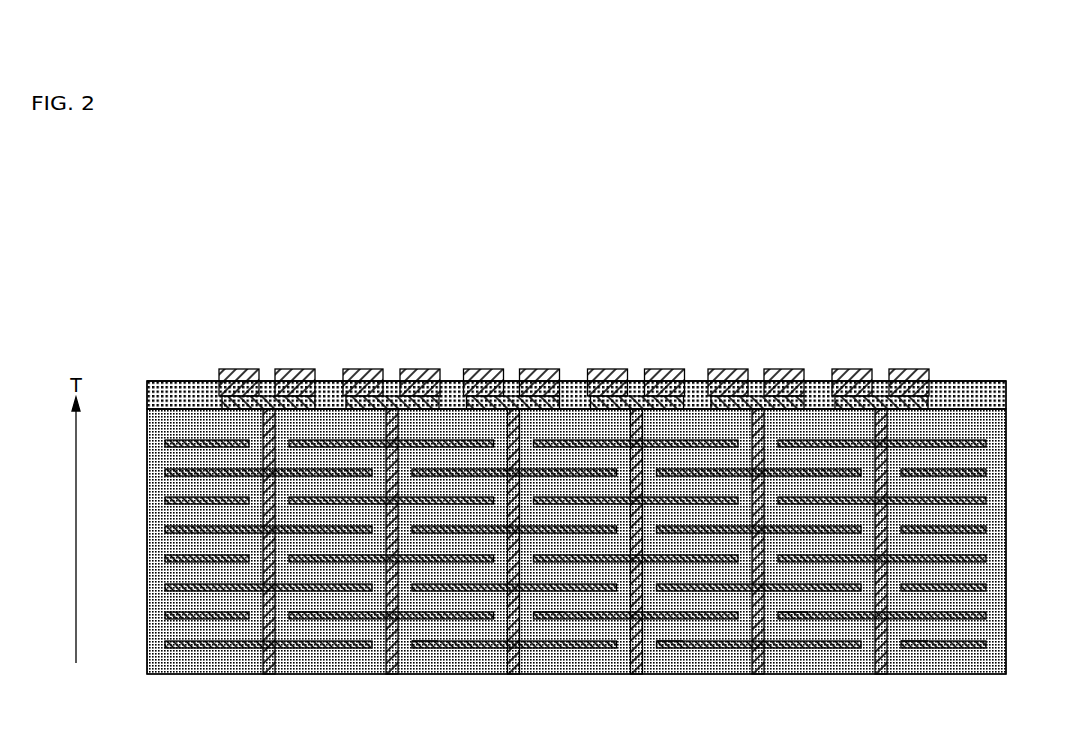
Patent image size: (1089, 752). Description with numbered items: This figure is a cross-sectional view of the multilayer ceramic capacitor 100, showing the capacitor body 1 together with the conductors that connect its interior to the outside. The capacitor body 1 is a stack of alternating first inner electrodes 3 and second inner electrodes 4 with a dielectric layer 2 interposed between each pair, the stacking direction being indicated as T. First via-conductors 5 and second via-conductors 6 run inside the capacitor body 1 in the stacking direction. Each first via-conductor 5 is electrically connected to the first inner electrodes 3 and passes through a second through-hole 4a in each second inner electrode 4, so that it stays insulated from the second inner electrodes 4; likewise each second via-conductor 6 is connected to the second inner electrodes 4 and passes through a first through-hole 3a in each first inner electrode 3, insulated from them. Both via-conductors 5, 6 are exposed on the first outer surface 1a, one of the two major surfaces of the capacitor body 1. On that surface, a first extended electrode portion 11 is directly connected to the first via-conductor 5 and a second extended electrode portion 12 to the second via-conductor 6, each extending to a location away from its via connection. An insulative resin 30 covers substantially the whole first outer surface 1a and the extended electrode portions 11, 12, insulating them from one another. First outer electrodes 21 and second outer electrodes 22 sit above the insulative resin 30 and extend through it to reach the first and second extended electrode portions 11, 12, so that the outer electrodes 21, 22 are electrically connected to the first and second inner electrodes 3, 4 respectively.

The multilayer ceramic capacitor 100 is at (188, 287).
The capacitor body 1 is at (1010, 414).
The first outer surface 1a is at (176, 394).
The dielectric layer 2 is at (962, 478).
The first inner electrode 3 is at (157, 465).
The first through-hole 3a is at (397, 639).
The second inner electrode 4 is at (157, 436).
The second through-hole 4a is at (273, 610).
The first via-conductor 5 is at (252, 660).
The second via-conductor 6 is at (377, 658).
The first extended electrode portion 11 is at (213, 393).
The second extended electrode portion 12 is at (335, 392).
The first outer electrode 21 is at (233, 361).
The second outer electrode 22 is at (356, 361).
The insulative resin 30 is at (977, 381).